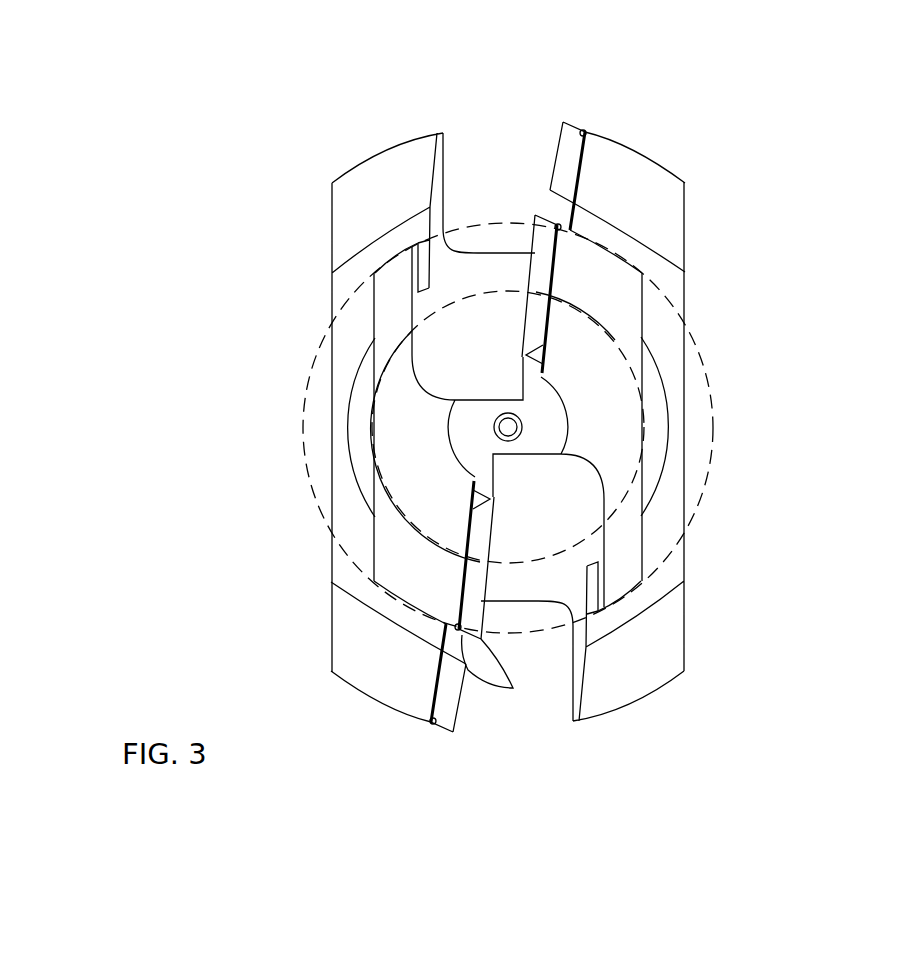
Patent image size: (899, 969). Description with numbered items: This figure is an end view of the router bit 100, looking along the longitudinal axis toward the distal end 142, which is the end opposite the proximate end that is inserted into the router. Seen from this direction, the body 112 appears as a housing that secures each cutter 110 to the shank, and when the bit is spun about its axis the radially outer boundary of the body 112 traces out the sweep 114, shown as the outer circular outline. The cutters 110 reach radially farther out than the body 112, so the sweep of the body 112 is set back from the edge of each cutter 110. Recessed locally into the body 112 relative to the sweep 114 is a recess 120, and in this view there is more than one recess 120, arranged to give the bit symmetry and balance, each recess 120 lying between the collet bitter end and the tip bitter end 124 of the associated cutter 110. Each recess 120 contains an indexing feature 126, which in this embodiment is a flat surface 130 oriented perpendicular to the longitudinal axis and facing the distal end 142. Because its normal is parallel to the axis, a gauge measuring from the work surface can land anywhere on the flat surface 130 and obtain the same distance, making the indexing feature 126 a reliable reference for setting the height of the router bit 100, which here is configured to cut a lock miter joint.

The router bit 100 is at (280, 157).
The cutter 110 is at (506, 676).
The body 112 is at (615, 291).
The sweep 114 is at (413, 527).
The recess 120 is at (357, 392).
The tip bitter end 124 is at (545, 347).
The indexing feature 126 is at (653, 428).
The flat surface 130 is at (653, 428).
The distal end 142 is at (490, 441).